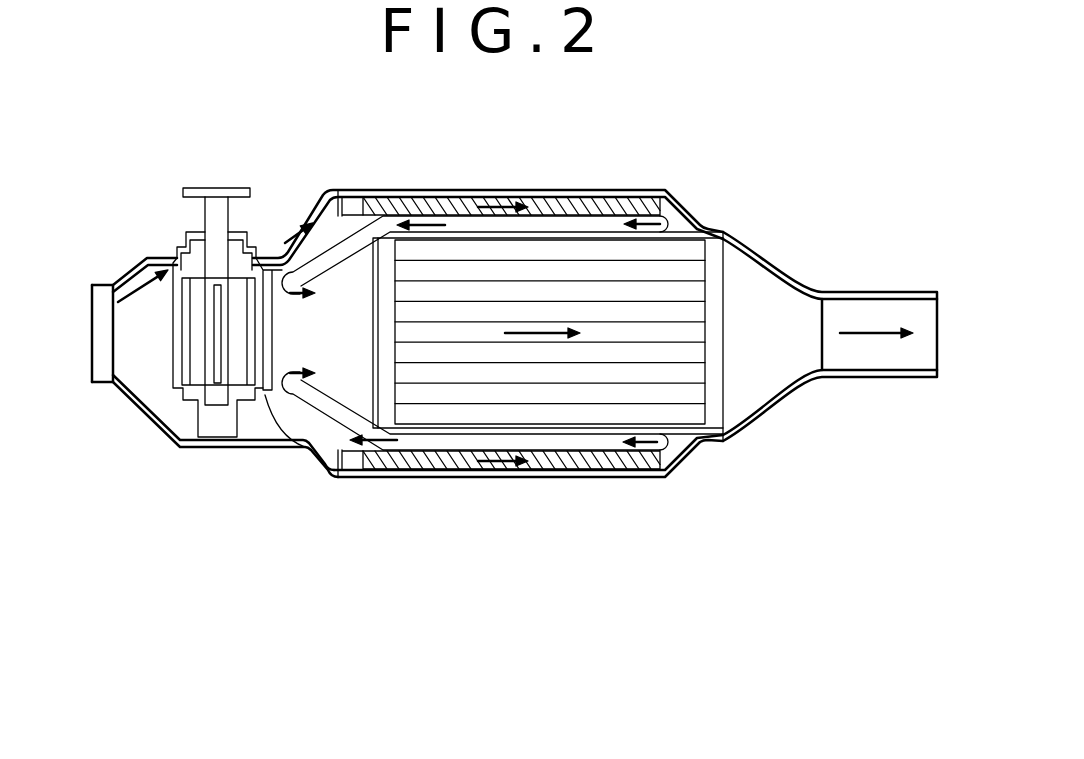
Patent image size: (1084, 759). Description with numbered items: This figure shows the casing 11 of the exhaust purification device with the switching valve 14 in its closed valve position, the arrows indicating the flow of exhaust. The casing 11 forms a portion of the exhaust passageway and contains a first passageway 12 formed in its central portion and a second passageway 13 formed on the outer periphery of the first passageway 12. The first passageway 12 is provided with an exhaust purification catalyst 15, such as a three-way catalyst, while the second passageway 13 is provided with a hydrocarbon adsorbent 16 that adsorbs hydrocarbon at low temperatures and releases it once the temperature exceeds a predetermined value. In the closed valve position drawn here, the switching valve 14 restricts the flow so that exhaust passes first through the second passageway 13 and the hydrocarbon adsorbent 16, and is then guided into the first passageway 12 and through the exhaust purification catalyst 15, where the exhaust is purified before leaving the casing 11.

The casing 11 is at (732, 233).
The first passageway 12 is at (343, 300).
The second passageway 13 is at (355, 207).
The switching valve 14 is at (205, 343).
The exhaust purification catalyst 15 is at (465, 393).
The hydrocarbon adsorbent 16 is at (571, 199).